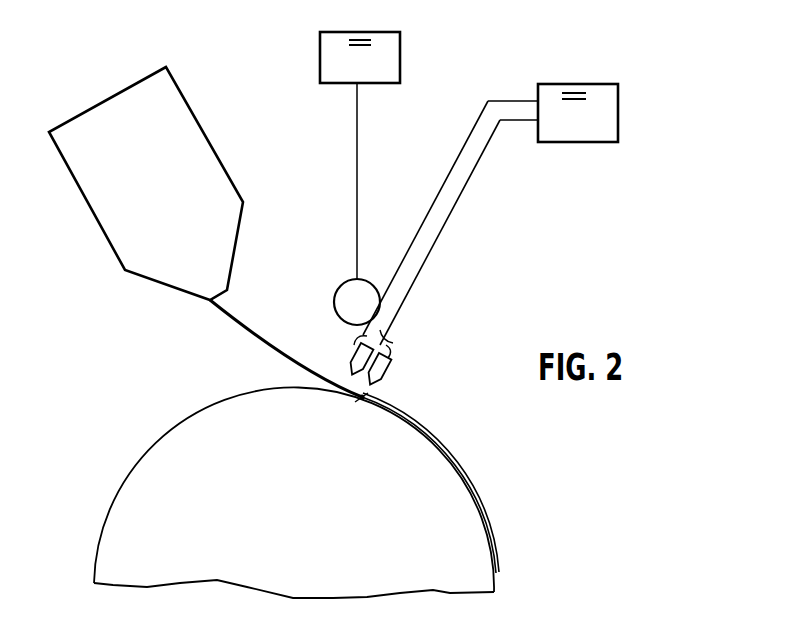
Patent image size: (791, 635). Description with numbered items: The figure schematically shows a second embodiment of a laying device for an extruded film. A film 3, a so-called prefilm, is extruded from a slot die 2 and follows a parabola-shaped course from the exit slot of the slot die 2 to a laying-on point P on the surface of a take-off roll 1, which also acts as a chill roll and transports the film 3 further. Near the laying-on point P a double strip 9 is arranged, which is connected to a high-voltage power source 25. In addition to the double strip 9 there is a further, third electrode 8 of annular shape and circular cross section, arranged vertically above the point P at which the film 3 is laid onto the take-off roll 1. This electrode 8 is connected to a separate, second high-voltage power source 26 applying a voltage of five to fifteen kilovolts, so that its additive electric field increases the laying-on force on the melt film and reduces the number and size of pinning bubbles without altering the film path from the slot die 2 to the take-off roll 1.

The take-off roll 1 is at (148, 458).
The slot die 2 is at (88, 199).
The film 3 is at (489, 515).
The electrode 8 is at (346, 295).
The double strip 9 is at (384, 328).
The high-voltage power source 25 is at (612, 100).
The second high-voltage power source 26 is at (395, 48).
The laying-on point P is at (363, 402).